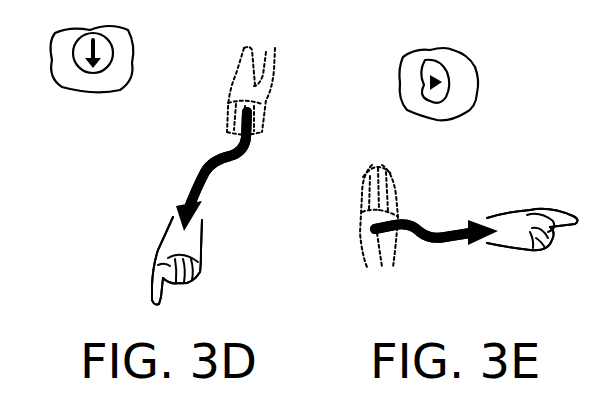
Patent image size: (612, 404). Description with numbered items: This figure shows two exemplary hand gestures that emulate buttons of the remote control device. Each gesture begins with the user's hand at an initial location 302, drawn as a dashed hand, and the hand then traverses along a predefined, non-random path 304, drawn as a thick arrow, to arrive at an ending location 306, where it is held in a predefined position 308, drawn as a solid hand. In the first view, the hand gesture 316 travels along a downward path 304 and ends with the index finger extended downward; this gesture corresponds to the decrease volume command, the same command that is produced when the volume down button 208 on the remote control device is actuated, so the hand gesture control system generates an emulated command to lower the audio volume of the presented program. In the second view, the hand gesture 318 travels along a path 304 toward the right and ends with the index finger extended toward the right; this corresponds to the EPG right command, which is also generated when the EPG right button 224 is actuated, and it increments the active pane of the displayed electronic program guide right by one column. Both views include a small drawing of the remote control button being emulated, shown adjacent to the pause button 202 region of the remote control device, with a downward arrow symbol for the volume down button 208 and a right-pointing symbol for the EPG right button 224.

In FIG. 3D, the pause button 202 is at (72, 88).
In FIG. 3E, the pause button 202 is at (470, 68).
In FIG. 3D, the volume down button 208 is at (117, 63).
In FIG. 3E, the EPG right button 224 is at (450, 85).
In FIG. 3D, the initial location 302 is at (222, 70).
In FIG. 3E, the initial location 302 is at (368, 157).
In FIG. 3D, the path 304 is at (204, 135).
In FIG. 3E, the path 304 is at (435, 211).
In FIG. 3D, the ending location 306 is at (154, 187).
In FIG. 3E, the ending location 306 is at (473, 211).
In FIG. 3D, the predefined position 308 is at (115, 247).
In FIG. 3E, the predefined position 308 is at (528, 196).
In FIG. 3D, the hand gesture 316 is at (214, 245).
In FIG. 3E, the hand gesture 318 is at (544, 269).